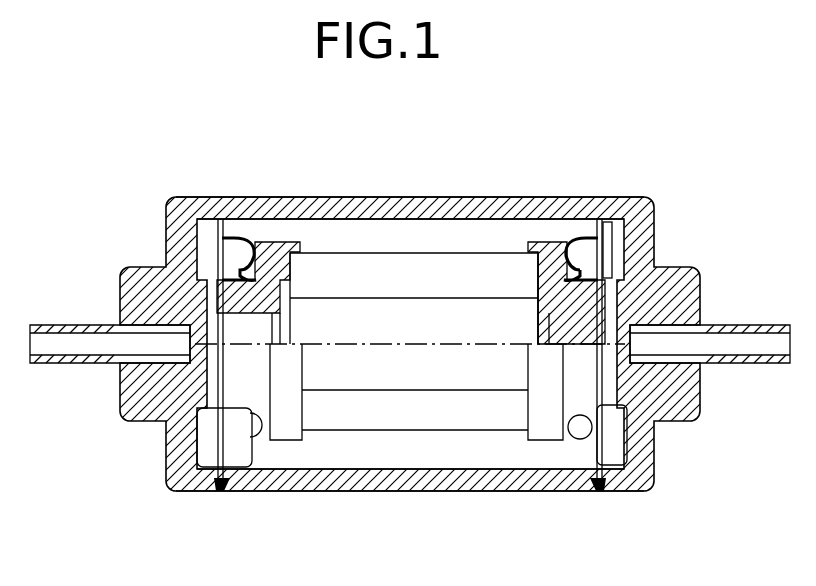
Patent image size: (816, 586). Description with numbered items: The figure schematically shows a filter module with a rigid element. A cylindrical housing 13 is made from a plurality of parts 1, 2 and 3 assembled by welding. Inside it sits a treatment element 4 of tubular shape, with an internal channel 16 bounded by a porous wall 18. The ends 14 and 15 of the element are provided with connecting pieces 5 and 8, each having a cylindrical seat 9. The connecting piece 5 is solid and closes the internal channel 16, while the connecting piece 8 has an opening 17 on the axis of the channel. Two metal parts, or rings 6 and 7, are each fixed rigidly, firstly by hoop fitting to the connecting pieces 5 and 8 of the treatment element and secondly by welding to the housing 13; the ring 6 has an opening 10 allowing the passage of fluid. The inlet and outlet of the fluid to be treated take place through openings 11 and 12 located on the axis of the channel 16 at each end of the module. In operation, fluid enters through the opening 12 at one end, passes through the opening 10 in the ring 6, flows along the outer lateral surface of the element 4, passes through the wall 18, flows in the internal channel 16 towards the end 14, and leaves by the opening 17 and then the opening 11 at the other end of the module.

The housing part 1 is at (172, 197).
The housing part 2 is at (639, 197).
The housing part 3 is at (350, 197).
The treatment element 4 is at (397, 246).
The connecting piece 5 is at (538, 242).
The ring 6 is at (607, 218).
The ring 7 is at (240, 237).
The connecting piece 8 is at (283, 242).
The cylindrical seat 9 is at (585, 265).
The opening 10 is at (580, 236).
The opening 11 is at (72, 322).
The opening 12 is at (763, 322).
The cylindrical housing 13 is at (462, 190).
The end of the treatment element 14 is at (297, 318).
The end of the treatment element 15 is at (532, 317).
The internal channel 16 is at (425, 343).
The opening 17 is at (240, 486).
The porous wall 18 is at (363, 280).